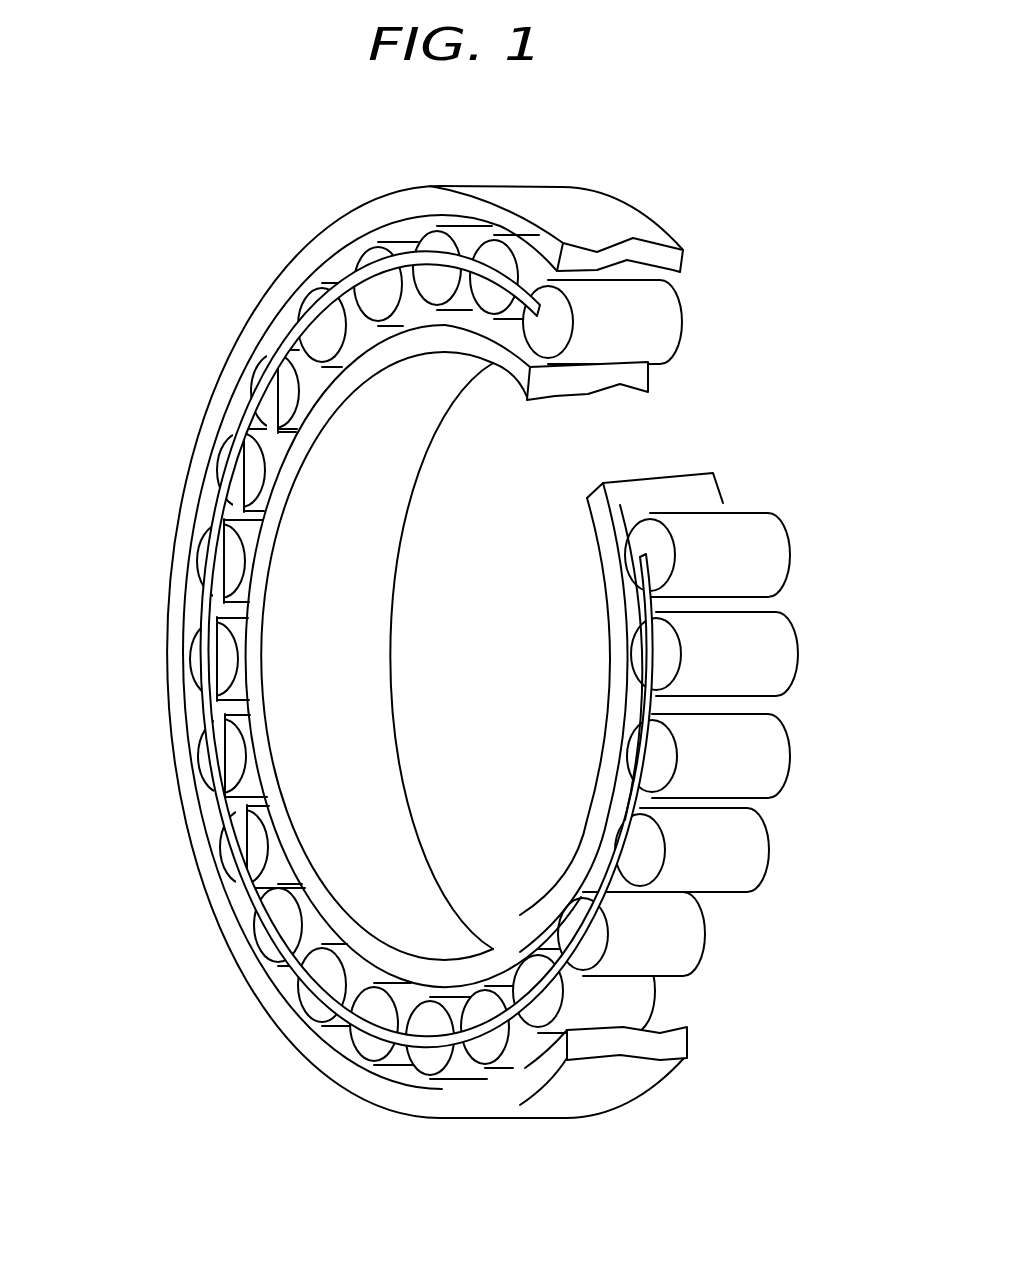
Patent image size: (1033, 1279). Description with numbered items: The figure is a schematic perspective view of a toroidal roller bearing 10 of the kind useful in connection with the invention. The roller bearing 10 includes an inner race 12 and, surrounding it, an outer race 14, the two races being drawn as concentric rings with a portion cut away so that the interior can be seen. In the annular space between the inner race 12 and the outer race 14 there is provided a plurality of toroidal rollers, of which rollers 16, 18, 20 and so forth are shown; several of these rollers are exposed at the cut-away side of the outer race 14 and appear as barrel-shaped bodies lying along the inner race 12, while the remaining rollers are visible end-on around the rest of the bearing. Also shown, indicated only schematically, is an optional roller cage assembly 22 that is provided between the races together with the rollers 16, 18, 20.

The roller bearing 10 is at (234, 264).
The inner race 12 is at (657, 392).
The outer race 14 is at (683, 259).
The roller 16 is at (763, 553).
The roller 18 is at (778, 648).
The roller 20 is at (768, 767).
The roller cage assembly 22 is at (239, 875).